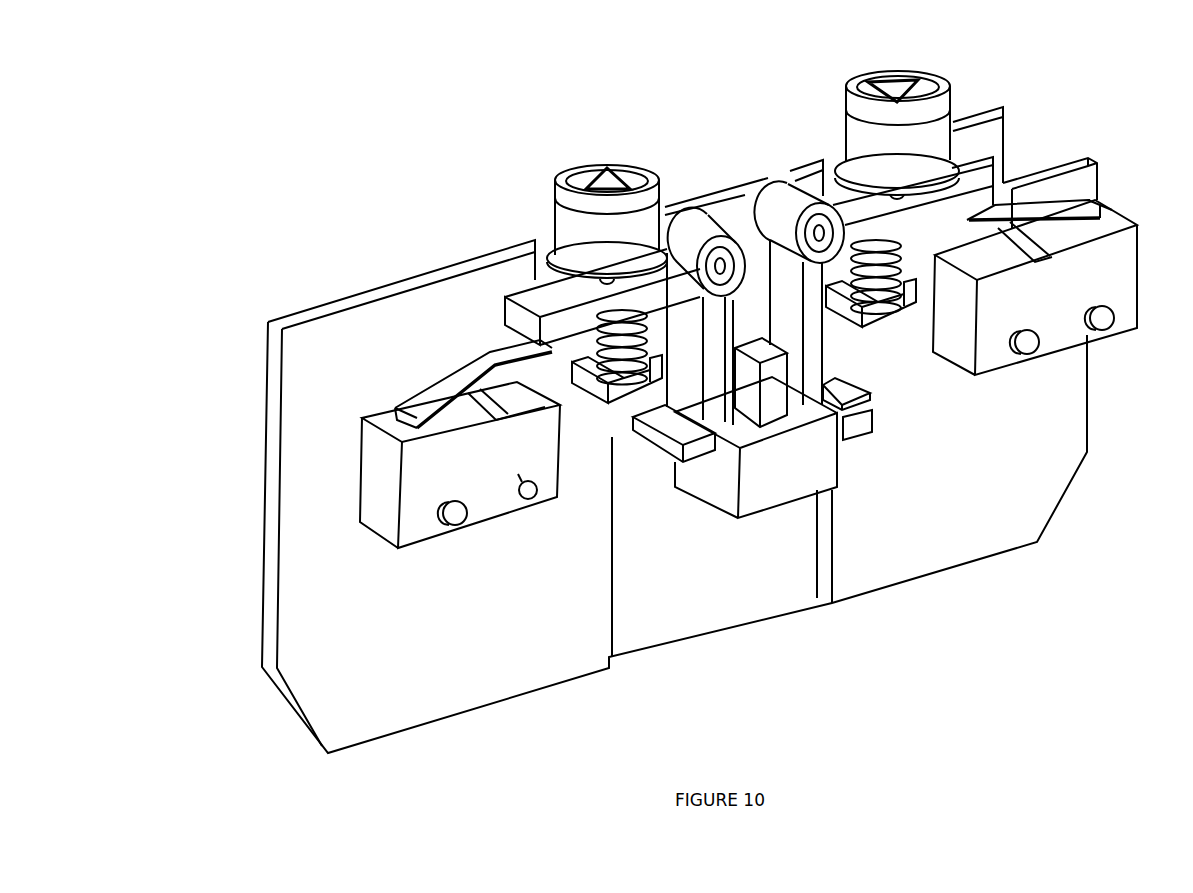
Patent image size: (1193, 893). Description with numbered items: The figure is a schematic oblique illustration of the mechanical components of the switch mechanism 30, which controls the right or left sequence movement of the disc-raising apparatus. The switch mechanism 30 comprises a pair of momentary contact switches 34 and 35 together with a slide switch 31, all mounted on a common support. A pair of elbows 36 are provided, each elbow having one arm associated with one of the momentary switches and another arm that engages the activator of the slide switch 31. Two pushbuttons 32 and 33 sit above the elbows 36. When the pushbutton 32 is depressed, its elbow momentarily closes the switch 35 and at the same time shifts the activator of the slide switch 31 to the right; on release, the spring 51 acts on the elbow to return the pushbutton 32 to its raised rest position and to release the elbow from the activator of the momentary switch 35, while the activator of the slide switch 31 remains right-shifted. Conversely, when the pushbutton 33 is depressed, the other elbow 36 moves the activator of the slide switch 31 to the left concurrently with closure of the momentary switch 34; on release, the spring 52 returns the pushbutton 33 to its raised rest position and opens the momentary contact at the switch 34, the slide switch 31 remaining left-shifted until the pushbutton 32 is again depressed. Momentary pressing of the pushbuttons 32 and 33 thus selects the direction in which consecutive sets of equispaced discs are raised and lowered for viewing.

The switch mechanism 30 is at (452, 132).
The slide switch 31 is at (780, 483).
The pushbutton 32 is at (608, 168).
The pushbutton 33 is at (886, 78).
The momentary contact switch 34 is at (1120, 293).
The momentary contact switch 35 is at (412, 475).
The elbow 36 is at (704, 238).
The spring 51 is at (618, 380).
The spring 52 is at (906, 345).